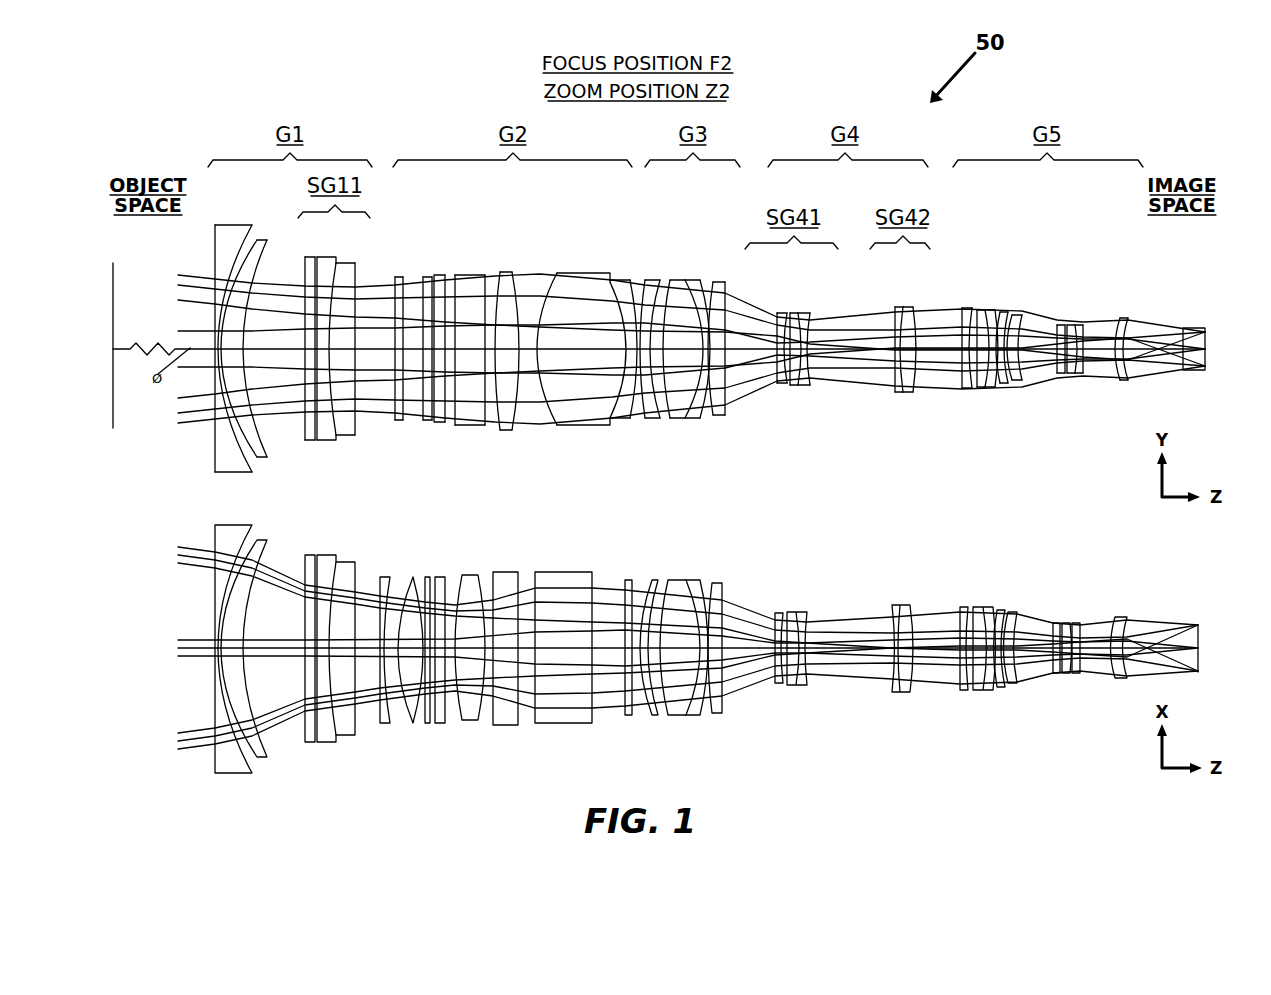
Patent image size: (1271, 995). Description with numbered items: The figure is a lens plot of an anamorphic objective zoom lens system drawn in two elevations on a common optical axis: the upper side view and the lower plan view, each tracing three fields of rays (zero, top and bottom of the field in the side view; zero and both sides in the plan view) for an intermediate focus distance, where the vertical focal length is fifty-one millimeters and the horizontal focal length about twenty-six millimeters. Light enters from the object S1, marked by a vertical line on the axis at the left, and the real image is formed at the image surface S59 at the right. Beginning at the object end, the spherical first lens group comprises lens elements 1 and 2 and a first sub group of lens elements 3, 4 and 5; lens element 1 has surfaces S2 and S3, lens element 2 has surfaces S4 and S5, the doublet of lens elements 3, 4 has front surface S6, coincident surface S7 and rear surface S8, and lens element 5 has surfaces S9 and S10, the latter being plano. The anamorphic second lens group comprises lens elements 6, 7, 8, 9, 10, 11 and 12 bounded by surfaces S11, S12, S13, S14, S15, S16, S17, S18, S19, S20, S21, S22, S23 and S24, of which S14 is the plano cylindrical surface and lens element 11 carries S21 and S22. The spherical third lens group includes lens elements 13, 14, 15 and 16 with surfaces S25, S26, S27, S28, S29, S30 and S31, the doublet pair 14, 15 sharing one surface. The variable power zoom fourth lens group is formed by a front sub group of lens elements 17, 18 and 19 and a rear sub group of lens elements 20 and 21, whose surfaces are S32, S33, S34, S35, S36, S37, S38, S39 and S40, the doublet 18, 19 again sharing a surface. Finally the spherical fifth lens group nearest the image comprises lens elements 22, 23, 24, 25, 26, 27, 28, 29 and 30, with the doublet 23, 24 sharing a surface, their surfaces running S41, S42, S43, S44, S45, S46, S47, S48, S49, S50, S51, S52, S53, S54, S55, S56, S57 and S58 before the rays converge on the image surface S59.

The lens element 1 is at (233, 225).
The lens element 2 is at (267, 241).
The lens element 3 is at (308, 257).
The lens element 4 is at (328, 257).
The lens element 5 is at (347, 263).
The lens element 6 is at (398, 277).
The lens element 7 is at (428, 277).
The lens element 8 is at (440, 275).
The lens element 9 is at (470, 275).
The lens element 10 is at (505, 272).
The lens element 11 is at (587, 273).
The lens element 12 is at (622, 280).
The lens element 13 is at (655, 280).
The lens element 14 is at (680, 280).
The lens element 15 is at (697, 280).
The lens element 16 is at (720, 283).
The lens element 17 is at (777, 313).
The lens element 18 is at (790, 313).
The lens element 19 is at (807, 312).
The lens element 20 is at (897, 307).
The lens element 21 is at (903, 305).
The lens element 22 is at (963, 307).
The lens element 23 is at (980, 307).
The lens element 24 is at (990, 308).
The lens element 25 is at (1005, 310).
The lens element 26 is at (1018, 313).
The lens element 27 is at (1058, 325).
The lens element 28 is at (1072, 325).
The lens element 29 is at (1078, 325).
The lens element 30 is at (1127, 318).
The object S1 is at (113, 388).
The lens surface S2 is at (212, 438).
The lens surface S3 is at (247, 453).
The lens surface S4 is at (243, 435).
The lens surface S5 is at (263, 443).
The lens surface S6 is at (307, 425).
The lens surface S7 is at (313, 440).
The lens surface S8 is at (330, 438).
The lens surface S9 is at (353, 443).
The lens surface S10 is at (355, 417).
The lens surface S11 is at (398, 425).
The lens surface S12 is at (422, 423).
The lens surface S13 is at (422, 333).
The lens surface S14 is at (432, 354).
The lens surface S15 is at (440, 423).
The lens surface S16 is at (445, 420).
The lens surface S17 is at (457, 430).
The lens surface S18 is at (486, 425).
The lens surface S19 is at (493, 420).
The lens surface S20 is at (521, 420).
The lens surface S21 is at (541, 420).
The lens surface S22 is at (608, 421).
The lens surface S23 is at (640, 420).
The lens surface S24 is at (655, 415).
The lens surface S25 is at (668, 415).
The lens surface S26 is at (684, 415).
The lens surface S27 is at (699, 415).
The lens surface S28 is at (712, 413).
The lens surface S29 is at (724, 413).
The lens surface S30 is at (715, 407).
The lens surface S31 is at (728, 407).
The lens surface S32 is at (782, 377).
The lens surface S33 is at (787, 383).
The lens surface S34 is at (791, 387).
The lens surface S35 is at (797, 387).
The lens surface S36 is at (812, 382).
The lens surface S37 is at (900, 310).
The lens surface S38 is at (893, 392).
The lens surface S39 is at (911, 392).
The lens surface S40 is at (915, 392).
The lens surface S41 is at (960, 382).
The lens surface S42 is at (962, 388).
The lens surface S43 is at (971, 390).
The lens surface S44 is at (977, 388).
The lens surface S45 is at (985, 390).
The lens surface S46 is at (996, 390).
The lens surface S47 is at (1002, 386).
The lens surface S48 is at (1010, 386).
The lens surface S49 is at (1016, 382).
The lens surface S50 is at (1022, 380).
The lens surface S51 is at (1058, 375).
The lens surface S52 is at (1065, 375).
The lens surface S53 is at (1068, 375).
The lens surface S54 is at (1074, 375).
The lens surface S55 is at (1078, 375).
The lens surface S56 is at (1082, 375).
The lens surface S57 is at (1121, 377).
The lens surface S58 is at (1128, 377).
The image surface S59 is at (1203, 333).